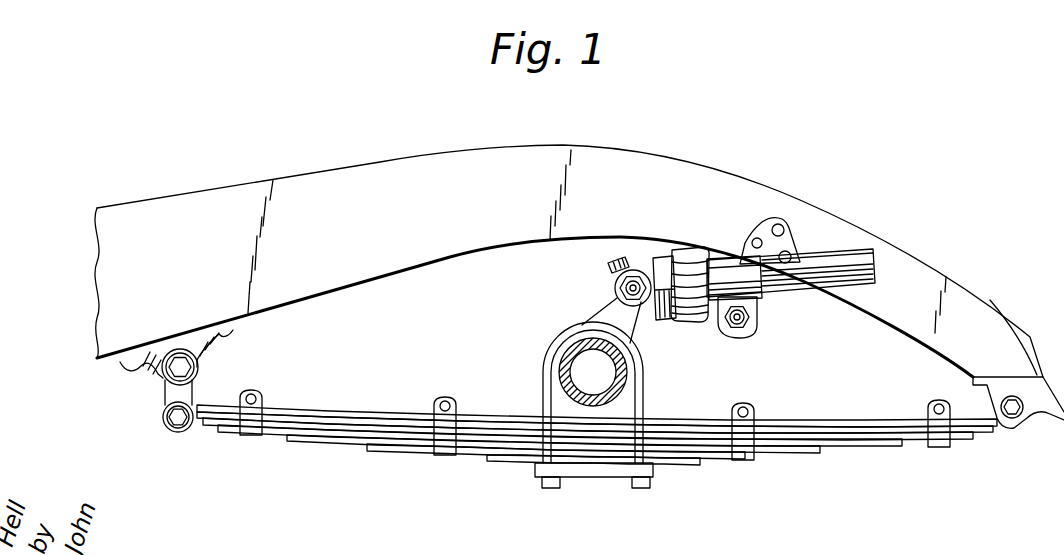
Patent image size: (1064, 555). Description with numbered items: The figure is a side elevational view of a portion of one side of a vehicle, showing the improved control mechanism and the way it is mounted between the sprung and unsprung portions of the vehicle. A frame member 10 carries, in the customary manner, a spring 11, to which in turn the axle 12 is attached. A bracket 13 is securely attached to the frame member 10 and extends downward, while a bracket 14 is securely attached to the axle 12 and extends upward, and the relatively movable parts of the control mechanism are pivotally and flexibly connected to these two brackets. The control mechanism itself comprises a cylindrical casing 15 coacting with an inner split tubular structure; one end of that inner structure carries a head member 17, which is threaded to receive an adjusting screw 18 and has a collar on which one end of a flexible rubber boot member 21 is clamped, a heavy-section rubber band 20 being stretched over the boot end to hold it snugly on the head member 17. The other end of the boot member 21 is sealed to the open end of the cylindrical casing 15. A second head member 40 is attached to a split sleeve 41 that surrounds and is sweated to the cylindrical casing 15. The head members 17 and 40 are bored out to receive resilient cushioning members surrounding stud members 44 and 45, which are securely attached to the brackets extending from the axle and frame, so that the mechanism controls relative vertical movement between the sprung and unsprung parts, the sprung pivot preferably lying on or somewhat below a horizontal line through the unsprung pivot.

The frame member 10 is at (380, 157).
The spring 11 is at (681, 498).
The axle 12 is at (568, 363).
The bracket 13 is at (776, 250).
The bracket 14 is at (610, 317).
The cylindrical casing 15 is at (875, 272).
The head member 17 is at (634, 265).
The adjusting screw 18 is at (618, 262).
The rubber band 20 is at (666, 322).
The boot member 21 is at (670, 258).
The head member 40 is at (748, 334).
The split sleeve 41 is at (722, 266).
The stud member 44 is at (622, 281).
The stud member 45 is at (738, 324).